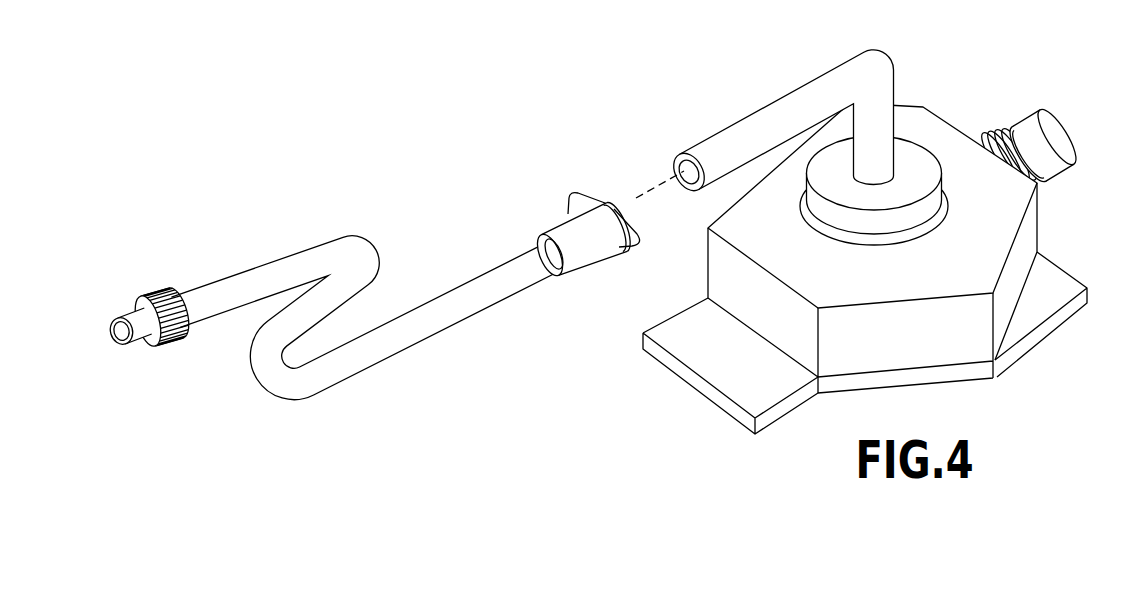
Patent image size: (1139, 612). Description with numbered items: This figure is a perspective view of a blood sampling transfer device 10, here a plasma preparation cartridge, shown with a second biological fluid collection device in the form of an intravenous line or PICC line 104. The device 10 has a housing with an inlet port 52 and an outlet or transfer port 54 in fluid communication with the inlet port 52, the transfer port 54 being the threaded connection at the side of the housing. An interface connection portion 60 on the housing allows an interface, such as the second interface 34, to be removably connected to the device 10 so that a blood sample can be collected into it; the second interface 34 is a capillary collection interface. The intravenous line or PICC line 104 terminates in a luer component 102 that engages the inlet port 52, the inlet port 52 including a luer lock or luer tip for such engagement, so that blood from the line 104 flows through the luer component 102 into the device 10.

The blood sampling transfer device 10 is at (686, 432).
The second interface 34 is at (752, 63).
The inlet port 52 is at (921, 111).
The transfer port 54 is at (1063, 168).
The interface connection portion 60 is at (912, 162).
The luer component 102 is at (549, 185).
The intravenous line or PICC line 104 is at (265, 218).